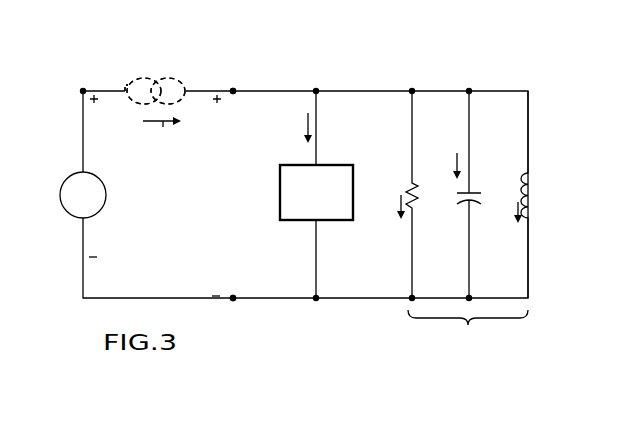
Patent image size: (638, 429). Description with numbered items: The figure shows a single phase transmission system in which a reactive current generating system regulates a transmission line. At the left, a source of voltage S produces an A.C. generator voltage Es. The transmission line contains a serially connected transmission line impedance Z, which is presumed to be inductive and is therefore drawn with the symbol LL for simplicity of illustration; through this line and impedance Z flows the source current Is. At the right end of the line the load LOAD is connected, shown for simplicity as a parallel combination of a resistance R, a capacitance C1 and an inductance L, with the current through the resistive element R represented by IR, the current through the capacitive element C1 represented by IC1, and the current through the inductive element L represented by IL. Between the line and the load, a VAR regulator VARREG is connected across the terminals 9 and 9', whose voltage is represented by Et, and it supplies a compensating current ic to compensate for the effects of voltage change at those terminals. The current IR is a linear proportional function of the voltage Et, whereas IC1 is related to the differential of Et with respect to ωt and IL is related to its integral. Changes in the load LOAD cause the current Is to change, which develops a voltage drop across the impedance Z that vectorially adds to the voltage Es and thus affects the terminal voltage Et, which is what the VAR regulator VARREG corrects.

The terminal 9 is at (231, 112).
The terminal 9' is at (233, 283).
The source of voltage S is at (83, 195).
The A.C. generator voltage Es is at (83, 75).
The transmission line impedance Z is at (155, 78).
The inductive line impedance symbol LL is at (171, 78).
The source current Is is at (161, 137).
The terminal voltage Et is at (236, 90).
The VAR regulator VARREG is at (316, 194).
The compensating current ic is at (301, 129).
The resistance R is at (419, 204).
The current through the resistive element IR is at (400, 200).
The capacitance C1 is at (481, 205).
The current through the capacitive element IC1 is at (456, 170).
The inductance L is at (525, 179).
The current through the inductive element IL is at (516, 206).
The load LOAD is at (468, 333).